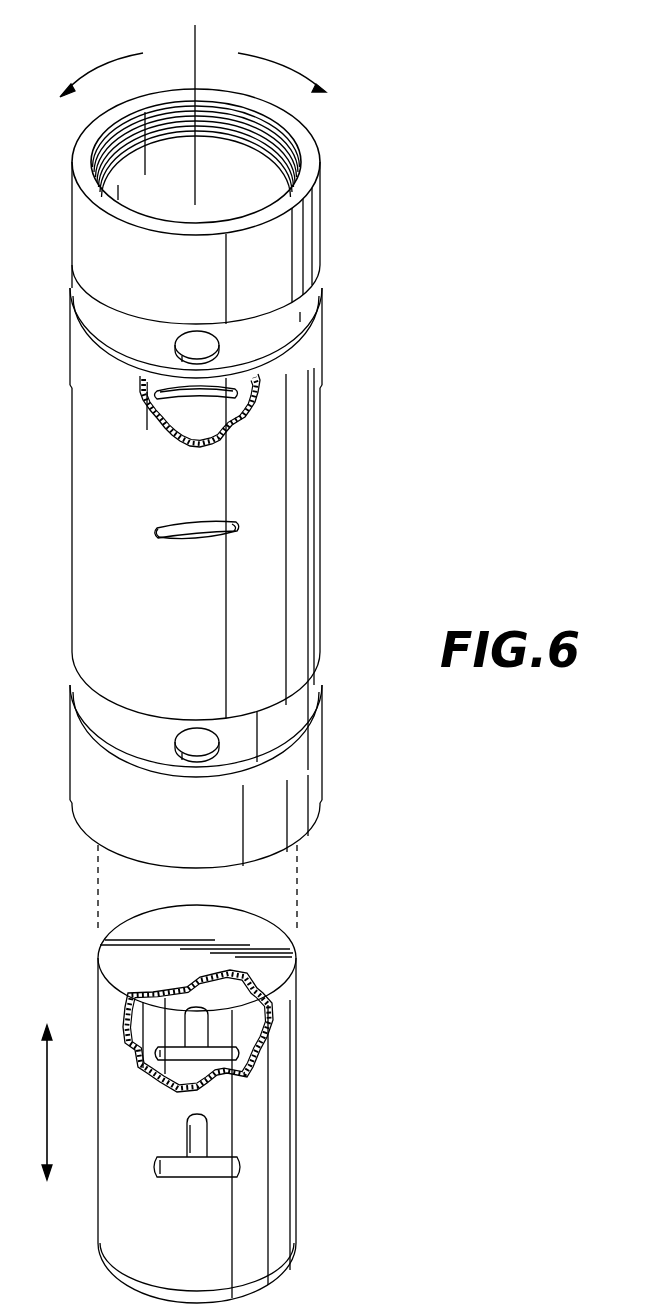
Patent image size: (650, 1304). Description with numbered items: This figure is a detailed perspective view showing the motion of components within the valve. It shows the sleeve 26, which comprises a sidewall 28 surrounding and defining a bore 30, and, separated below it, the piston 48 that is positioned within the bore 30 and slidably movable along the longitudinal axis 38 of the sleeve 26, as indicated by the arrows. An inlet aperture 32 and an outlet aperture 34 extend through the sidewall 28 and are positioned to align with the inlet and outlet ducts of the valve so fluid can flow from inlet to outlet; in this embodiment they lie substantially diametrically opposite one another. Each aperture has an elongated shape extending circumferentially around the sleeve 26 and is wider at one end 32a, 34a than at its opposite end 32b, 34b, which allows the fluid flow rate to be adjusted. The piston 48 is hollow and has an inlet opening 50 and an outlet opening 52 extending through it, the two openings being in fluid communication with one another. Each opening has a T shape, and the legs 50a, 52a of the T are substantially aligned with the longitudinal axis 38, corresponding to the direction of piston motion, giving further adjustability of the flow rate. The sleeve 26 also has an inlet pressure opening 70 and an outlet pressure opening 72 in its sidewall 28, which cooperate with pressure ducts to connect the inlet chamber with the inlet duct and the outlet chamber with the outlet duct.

The sleeve 26 is at (312, 413).
The sidewall 28 is at (307, 142).
The bore 30 is at (235, 193).
The inlet aperture 32 is at (236, 532).
The wider end of inlet aperture 32a is at (232, 536).
The narrower end of inlet aperture 32b is at (157, 531).
The outlet aperture 34 is at (198, 395).
The wider end of outlet aperture 34a is at (147, 410).
The narrower end of outlet aperture 34b is at (248, 408).
The longitudinal axis 38 is at (197, 48).
The piston 48 is at (280, 1115).
The inlet opening 50 is at (197, 1159).
The leg of inlet opening 50a is at (195, 1123).
The outlet opening 52 is at (197, 1003).
The leg of outlet opening 52a is at (212, 997).
The inlet pressure opening 70 is at (199, 347).
The outlet pressure opening 72 is at (197, 757).